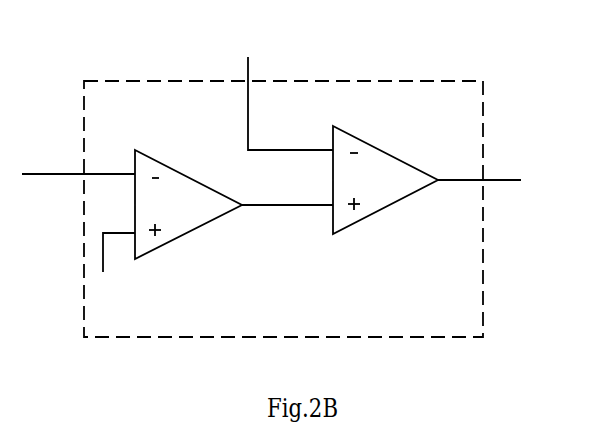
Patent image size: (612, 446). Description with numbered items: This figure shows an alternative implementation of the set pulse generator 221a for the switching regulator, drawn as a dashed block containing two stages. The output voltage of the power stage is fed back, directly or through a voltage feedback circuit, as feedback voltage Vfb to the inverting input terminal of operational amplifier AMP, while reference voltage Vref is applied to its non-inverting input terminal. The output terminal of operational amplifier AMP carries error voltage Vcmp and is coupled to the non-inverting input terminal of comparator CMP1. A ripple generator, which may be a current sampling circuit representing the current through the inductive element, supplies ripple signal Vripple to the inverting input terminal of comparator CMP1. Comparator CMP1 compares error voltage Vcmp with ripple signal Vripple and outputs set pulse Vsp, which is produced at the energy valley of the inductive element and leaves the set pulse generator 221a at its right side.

The set pulse generator 221a is at (483, 102).
The operational amplifier AMP is at (213, 212).
The comparator CMP1 is at (414, 187).
The feedback voltage Vfb is at (78, 158).
The reference voltage Vref is at (113, 268).
The error voltage Vcmp is at (270, 226).
The ripple signal Vripple is at (273, 90).
The set pulse Vsp is at (505, 180).